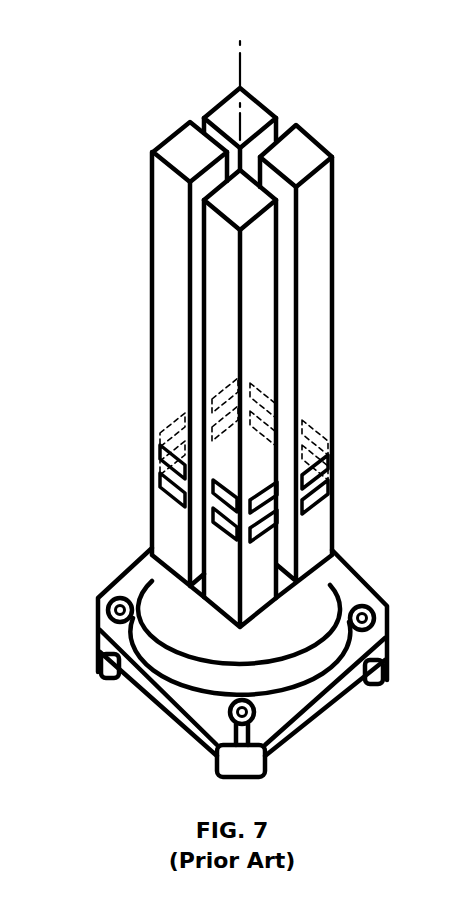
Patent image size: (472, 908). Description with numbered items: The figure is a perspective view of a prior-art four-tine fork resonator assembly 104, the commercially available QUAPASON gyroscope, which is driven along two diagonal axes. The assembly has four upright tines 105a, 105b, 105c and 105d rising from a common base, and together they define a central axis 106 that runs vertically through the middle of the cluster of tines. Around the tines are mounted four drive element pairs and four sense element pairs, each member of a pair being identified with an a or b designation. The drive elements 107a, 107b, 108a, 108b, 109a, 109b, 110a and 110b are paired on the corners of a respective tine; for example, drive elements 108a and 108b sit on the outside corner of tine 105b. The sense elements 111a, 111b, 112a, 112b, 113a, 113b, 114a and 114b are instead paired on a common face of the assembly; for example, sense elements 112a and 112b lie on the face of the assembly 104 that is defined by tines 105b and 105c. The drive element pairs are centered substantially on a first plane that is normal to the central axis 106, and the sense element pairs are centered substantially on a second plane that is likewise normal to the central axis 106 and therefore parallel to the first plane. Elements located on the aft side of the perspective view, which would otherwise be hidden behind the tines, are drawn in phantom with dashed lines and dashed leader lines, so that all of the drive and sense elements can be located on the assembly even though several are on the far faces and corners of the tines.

The 4-tine fork resonator assembly 104 is at (100, 77).
The tine 105a is at (308, 134).
The tine 105b is at (283, 236).
The tine 105c is at (152, 190).
The tine 105d is at (215, 109).
The central axis 106 is at (240, 62).
The drive element 107a is at (328, 466).
The drive element 107b is at (278, 518).
The drive element 108a is at (267, 541).
The drive element 108b is at (226, 532).
The drive element 109a is at (160, 482).
The drive element 109b is at (160, 461).
The drive element 110a is at (212, 427).
The drive element 110b is at (276, 432).
The sense element 111a is at (328, 456).
The sense element 111b is at (330, 477).
The sense element 112a is at (213, 509).
The sense element 112b is at (160, 452).
The sense element 113a is at (160, 433).
The sense element 113b is at (212, 399).
The sense element 114a is at (276, 404).
The sense element 114b is at (328, 441).